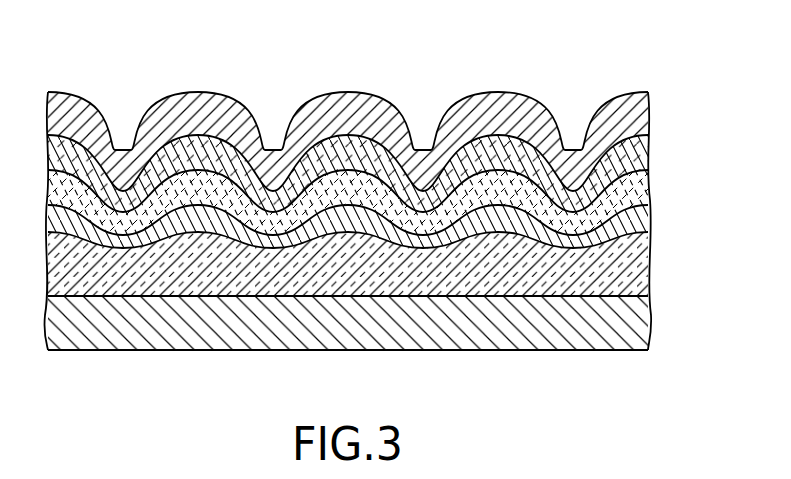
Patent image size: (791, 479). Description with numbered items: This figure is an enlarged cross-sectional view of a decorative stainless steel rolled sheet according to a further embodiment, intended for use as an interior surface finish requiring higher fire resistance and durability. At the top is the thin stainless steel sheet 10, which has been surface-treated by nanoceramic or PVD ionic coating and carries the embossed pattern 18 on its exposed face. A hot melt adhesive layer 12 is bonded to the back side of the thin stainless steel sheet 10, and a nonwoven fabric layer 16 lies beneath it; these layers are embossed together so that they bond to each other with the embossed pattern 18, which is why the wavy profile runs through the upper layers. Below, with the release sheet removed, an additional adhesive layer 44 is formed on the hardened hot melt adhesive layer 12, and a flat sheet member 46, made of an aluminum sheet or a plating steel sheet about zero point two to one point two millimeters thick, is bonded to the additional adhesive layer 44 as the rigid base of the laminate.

The thin stainless steel sheet 10 is at (376, 202).
The hot melt adhesive layer 12 is at (637, 153).
The nonwoven fabric layer 16 is at (627, 187).
The embossed pattern 18 is at (303, 106).
The additional adhesive layer 44 is at (632, 263).
The sheet member 46 is at (613, 350).